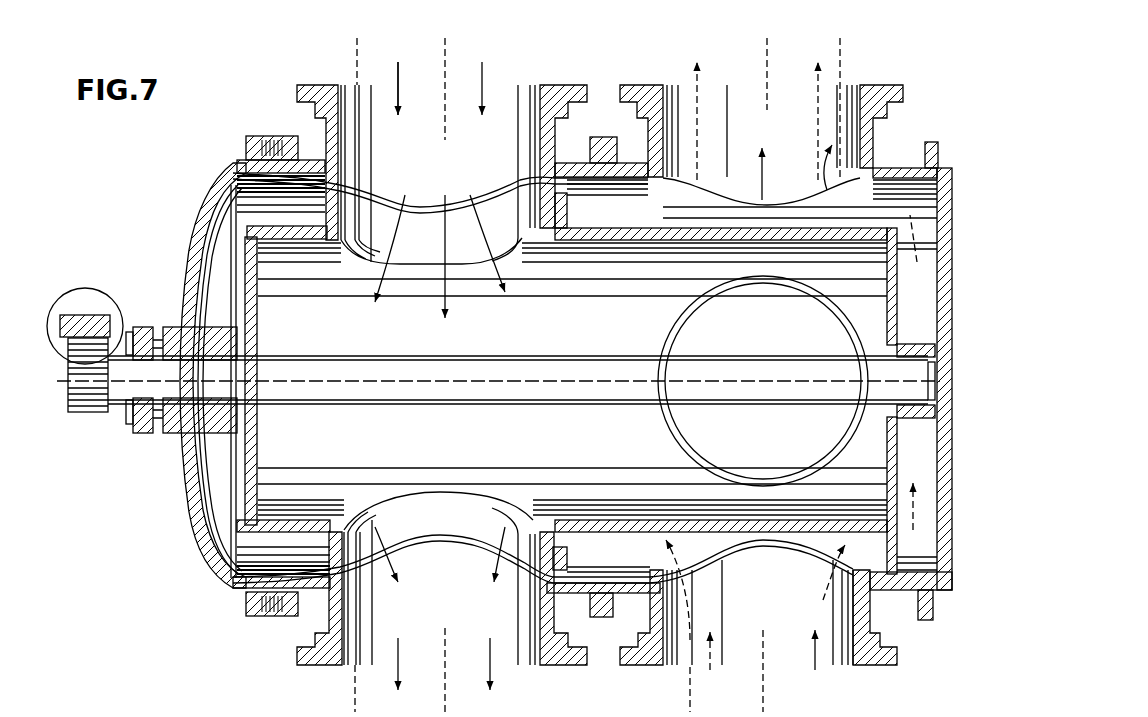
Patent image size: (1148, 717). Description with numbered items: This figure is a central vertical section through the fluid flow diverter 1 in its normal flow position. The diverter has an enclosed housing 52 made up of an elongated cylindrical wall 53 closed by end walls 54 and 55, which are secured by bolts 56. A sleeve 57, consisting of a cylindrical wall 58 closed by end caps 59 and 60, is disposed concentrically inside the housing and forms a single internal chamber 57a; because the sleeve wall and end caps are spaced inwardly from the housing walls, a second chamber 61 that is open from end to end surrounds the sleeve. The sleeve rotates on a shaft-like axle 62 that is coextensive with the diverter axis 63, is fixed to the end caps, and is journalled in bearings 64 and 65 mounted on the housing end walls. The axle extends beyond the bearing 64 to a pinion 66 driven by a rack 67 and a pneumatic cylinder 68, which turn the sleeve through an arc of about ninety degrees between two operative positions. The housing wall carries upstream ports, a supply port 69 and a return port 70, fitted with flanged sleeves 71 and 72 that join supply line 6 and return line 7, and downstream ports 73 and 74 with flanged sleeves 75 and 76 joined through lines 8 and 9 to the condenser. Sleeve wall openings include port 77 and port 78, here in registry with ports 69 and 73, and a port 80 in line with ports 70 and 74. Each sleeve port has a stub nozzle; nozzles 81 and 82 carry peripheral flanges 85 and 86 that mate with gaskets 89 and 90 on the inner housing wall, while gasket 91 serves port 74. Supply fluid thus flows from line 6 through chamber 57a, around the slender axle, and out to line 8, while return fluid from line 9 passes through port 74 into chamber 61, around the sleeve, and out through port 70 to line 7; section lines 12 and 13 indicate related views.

The fluid flow diverter 1 is at (252, 68).
The fluid supply line 6 is at (356, 60).
The return line 7 is at (842, 66).
The line 8 is at (354, 700).
The line 9 is at (440, 45).
The section line 12 is at (450, 45).
The section line 13 is at (735, 45).
The housing 52 is at (915, 160).
The cylindrical wall 53 is at (886, 173).
The end wall 54 is at (200, 214).
The end wall 55 is at (938, 267).
The bolts 56 is at (250, 138).
The sleeve 57 is at (893, 209).
The internal chamber 57a is at (727, 265).
The cylindrical wall 58 is at (633, 228).
The end cap 59 is at (258, 321).
The end cap 60 is at (887, 290).
The chamber 61 is at (213, 484).
The axle 62 is at (396, 397).
The diverter axis 63 is at (983, 374).
The bearing 64 is at (207, 328).
The bearing 65 is at (926, 332).
The pinion 66 is at (87, 412).
The rack 67 is at (86, 316).
The pneumatic cylinder 68 is at (110, 288).
The supply port 69 is at (503, 147).
The return port 70 is at (797, 113).
The flanged sleeve 71 is at (326, 135).
The flanged sleeve 72 is at (648, 136).
The downstream port 73 is at (472, 652).
The downstream port 74 is at (793, 654).
The flanged sleeve 75 is at (330, 612).
The flanged sleeve 76 is at (880, 624).
The sleeve port 77 is at (439, 240).
The sleeve port 78 is at (455, 516).
The sleeve port 80 is at (681, 441).
The stub nozzle 81 is at (540, 213).
The stub nozzle 82 is at (545, 535).
The peripheral flange 85 is at (232, 181).
The peripheral flange 86 is at (333, 548).
The peripheral gasket 89 is at (247, 165).
The peripheral gasket 90 is at (253, 597).
The peripheral gasket 91 is at (884, 583).